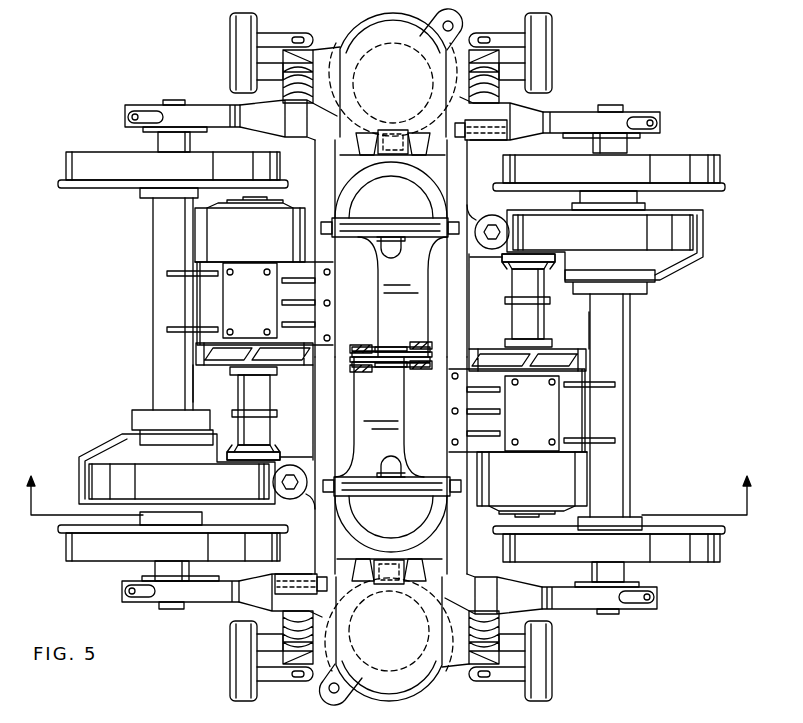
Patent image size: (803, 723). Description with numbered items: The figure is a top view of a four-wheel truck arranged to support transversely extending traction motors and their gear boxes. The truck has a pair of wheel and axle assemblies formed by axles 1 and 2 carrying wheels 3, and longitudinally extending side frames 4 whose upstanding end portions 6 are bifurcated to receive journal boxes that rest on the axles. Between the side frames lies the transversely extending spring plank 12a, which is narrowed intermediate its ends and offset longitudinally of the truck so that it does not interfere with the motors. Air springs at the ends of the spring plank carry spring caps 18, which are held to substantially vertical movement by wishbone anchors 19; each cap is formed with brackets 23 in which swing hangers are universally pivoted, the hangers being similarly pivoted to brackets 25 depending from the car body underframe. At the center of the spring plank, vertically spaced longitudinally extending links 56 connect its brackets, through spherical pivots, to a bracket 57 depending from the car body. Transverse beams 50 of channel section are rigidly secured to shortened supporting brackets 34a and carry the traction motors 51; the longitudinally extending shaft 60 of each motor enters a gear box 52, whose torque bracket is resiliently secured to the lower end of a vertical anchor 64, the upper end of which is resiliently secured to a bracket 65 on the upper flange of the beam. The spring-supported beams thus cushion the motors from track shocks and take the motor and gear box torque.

The axle 1 is at (632, 406).
The axle 2 is at (152, 351).
The wheels 3 is at (63, 546).
The side frame 4 is at (563, 107).
The end portion 6 is at (389, 483).
The spring plank 12a is at (391, 357).
The spring cap 18 is at (391, 357).
The anchor 19 is at (404, 180).
The bracket 23 is at (317, 672).
The bracket 25 is at (513, 663).
The supporting bracket 34a is at (320, 127).
The transverse beam 50 is at (325, 394).
The traction motor 51 is at (391, 357).
The gear box 52 is at (391, 357).
The link 56 is at (392, 344).
The bracket 57 is at (360, 343).
The shaft 60 is at (247, 393).
The anchor 64 is at (272, 485).
The bracket 65 is at (288, 460).